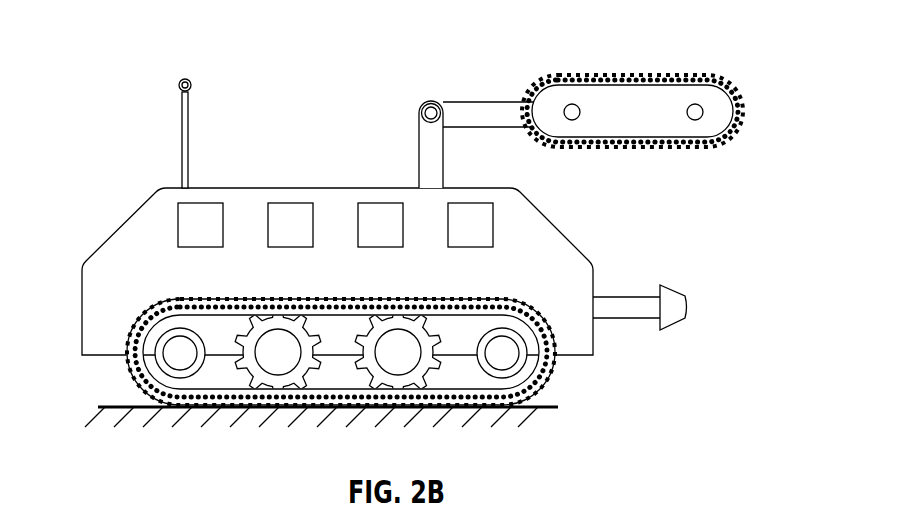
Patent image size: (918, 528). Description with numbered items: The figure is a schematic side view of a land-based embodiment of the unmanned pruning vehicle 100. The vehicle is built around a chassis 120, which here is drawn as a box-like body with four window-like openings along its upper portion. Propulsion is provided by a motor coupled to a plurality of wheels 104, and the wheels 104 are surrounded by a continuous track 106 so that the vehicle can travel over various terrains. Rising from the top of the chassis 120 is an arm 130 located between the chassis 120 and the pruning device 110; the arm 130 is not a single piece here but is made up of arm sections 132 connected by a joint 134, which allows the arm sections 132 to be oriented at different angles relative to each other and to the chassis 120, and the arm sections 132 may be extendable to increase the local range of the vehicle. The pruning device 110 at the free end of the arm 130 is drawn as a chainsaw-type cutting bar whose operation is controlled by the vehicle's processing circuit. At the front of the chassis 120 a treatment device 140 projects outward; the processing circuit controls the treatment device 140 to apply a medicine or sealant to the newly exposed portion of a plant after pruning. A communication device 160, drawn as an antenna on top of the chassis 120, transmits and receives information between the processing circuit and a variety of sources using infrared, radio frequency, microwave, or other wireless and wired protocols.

The unmanned pruning vehicle 100 is at (108, 44).
The wheels 104 is at (180, 355).
The continuous track 106 is at (543, 368).
The pruning device 110 is at (736, 79).
The chassis 120 is at (556, 224).
The arm 130 is at (412, 145).
The arm sections 132 is at (491, 108).
The joints 134 is at (423, 108).
The treatment device 140 is at (694, 308).
The communication device 160 is at (177, 144).